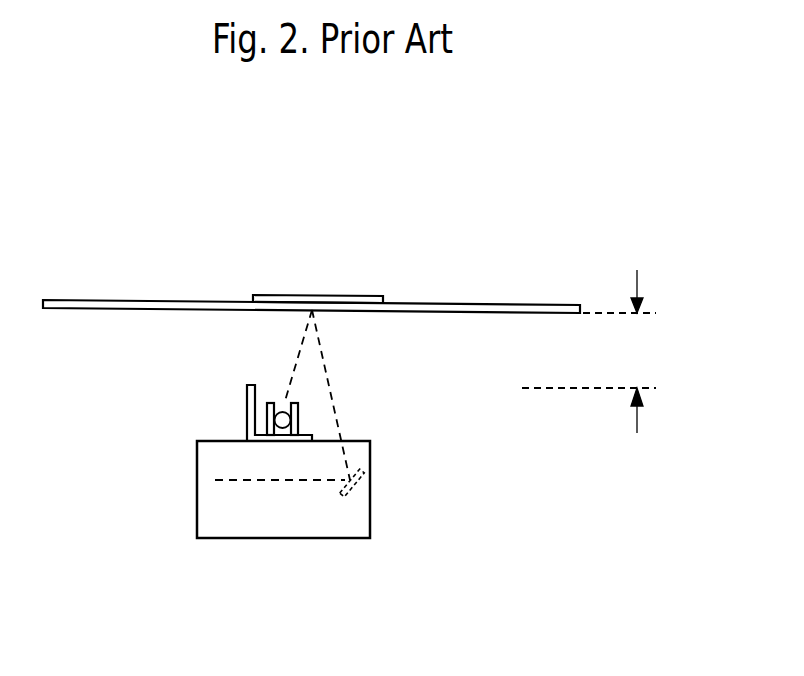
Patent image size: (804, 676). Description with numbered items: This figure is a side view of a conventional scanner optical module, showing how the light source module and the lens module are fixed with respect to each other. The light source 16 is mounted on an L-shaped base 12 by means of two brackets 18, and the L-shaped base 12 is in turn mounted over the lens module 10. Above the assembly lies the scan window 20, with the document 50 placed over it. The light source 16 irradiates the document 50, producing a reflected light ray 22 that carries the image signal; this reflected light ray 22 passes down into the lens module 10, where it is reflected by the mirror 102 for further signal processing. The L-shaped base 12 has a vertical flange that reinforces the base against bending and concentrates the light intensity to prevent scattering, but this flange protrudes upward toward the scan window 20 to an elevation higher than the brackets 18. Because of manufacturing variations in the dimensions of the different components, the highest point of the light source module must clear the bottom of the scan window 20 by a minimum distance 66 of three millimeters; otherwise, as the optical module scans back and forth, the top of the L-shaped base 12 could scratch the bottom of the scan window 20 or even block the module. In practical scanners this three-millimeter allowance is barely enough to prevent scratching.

The lens module 10 is at (313, 518).
The L-shaped base 12 is at (247, 385).
The light source 16 is at (267, 415).
The brackets 18 is at (267, 415).
The scan window 20 is at (541, 305).
The reflected light ray 22 is at (325, 365).
The document 50 is at (337, 296).
The distance 66 is at (589, 351).
The mirror 102 is at (358, 487).